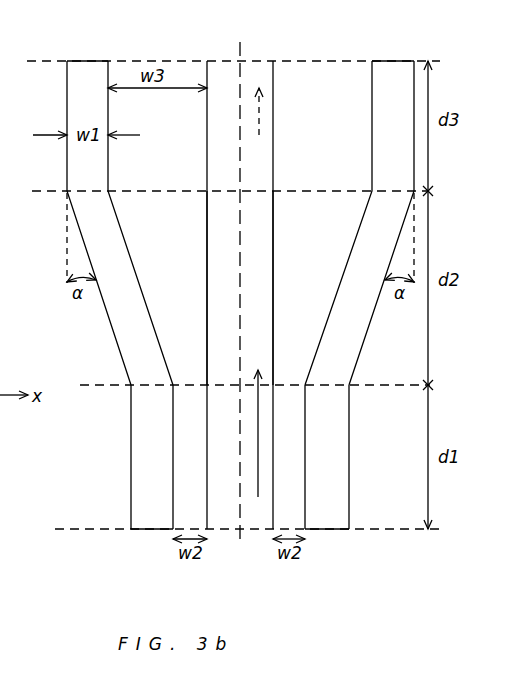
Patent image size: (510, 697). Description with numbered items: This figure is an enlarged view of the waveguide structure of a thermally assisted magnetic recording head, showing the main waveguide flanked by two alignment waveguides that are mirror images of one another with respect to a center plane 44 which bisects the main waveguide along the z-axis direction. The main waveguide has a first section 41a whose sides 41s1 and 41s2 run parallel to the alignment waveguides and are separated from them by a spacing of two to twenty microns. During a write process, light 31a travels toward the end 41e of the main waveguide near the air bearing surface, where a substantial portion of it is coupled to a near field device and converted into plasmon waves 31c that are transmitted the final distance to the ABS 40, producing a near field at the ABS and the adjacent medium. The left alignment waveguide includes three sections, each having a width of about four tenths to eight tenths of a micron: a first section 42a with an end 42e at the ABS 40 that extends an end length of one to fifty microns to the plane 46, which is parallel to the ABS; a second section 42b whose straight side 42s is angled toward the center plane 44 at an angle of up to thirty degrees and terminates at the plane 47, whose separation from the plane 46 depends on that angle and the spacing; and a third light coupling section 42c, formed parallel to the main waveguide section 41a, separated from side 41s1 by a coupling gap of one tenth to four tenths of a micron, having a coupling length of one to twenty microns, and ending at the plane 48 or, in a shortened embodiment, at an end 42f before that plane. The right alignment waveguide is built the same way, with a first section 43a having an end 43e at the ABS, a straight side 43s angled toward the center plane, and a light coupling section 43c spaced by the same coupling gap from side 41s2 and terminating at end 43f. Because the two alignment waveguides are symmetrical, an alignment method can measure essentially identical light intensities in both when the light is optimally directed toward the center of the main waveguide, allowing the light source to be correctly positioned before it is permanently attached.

The light 31a is at (260, 412).
The plasmon waves 31c is at (266, 108).
The ABS 40 is at (238, 61).
The first section of main waveguide 41a is at (264, 72).
The end of main waveguide 41e is at (226, 47).
The side of first section 41s1 is at (207, 283).
The side of first section 41s2 is at (273, 283).
The first section of AWVG 42 42a is at (82, 72).
The second section of AWVG 42 42b is at (125, 348).
The third (light coupling) section of AWVG 42 42c is at (140, 470).
The end of section 42a 42e is at (100, 60).
The end of AWVG 42 42f is at (141, 531).
The straight side of section 42b 42s is at (106, 316).
The first section of AWVG 43 43a is at (402, 72).
The third (light coupling) section of AWVG 43 43c is at (338, 470).
The end of section 43a 43e is at (378, 47).
The end of AWVG 43 43f is at (333, 531).
The straight side of section 43b 43s is at (375, 317).
The center plane 44 is at (239, 288).
The plane 46 is at (239, 191).
The plane 47 is at (268, 385).
The plane 48 is at (249, 530).